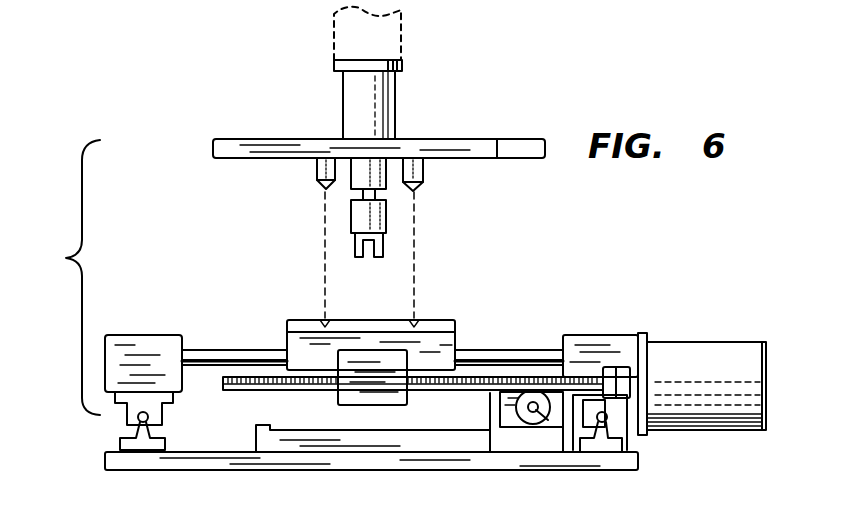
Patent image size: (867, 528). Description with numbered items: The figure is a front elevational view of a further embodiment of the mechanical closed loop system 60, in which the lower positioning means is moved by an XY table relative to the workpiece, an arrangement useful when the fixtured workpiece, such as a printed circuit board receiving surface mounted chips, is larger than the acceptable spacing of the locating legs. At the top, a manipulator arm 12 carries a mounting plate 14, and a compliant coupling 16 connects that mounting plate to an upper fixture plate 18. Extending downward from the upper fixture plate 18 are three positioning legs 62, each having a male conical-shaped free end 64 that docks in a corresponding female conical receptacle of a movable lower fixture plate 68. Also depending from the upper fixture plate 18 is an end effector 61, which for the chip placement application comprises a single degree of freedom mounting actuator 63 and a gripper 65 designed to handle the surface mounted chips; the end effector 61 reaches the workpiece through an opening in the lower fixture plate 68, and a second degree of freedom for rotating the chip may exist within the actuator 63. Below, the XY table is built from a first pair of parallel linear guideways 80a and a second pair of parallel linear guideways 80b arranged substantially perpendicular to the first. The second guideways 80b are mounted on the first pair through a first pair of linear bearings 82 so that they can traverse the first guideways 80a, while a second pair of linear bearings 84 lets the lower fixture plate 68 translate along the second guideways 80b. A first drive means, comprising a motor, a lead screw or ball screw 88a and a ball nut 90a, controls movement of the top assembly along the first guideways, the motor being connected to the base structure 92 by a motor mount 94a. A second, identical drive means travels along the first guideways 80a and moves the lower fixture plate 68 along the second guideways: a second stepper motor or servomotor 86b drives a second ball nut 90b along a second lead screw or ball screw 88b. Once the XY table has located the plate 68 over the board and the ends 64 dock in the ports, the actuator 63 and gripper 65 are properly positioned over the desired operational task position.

The manipulator arm 12 is at (332, 33).
The mounting plate 14 is at (334, 66).
The compliant coupling 16 is at (343, 93).
The upper fixture plate 18 is at (522, 139).
The mechanical closed loop system 60 is at (63, 277).
The end effector 61 is at (336, 222).
The positioning legs 62 is at (317, 166).
The mounting actuator 63 is at (357, 178).
The male conical-shaped free end 64 is at (324, 187).
The gripper 65 is at (386, 250).
The lower fixture plate 68 is at (440, 320).
The first pair of parallel linear guideways 80a is at (138, 420).
The second pair of parallel linear guideways 80b is at (522, 352).
The first pair of linear bearings 82 is at (140, 338).
The second pair of linear bearings 84 is at (448, 341).
The second stepper motor or servomotor 86b is at (697, 342).
The lead screw or ball screw 88a is at (556, 425).
The second lead screw or ball screw 88b is at (477, 390).
The ball nut 90a is at (510, 428).
The second ball nut 90b is at (348, 396).
The base structure 92 is at (214, 470).
The motor mount 94a is at (502, 440).